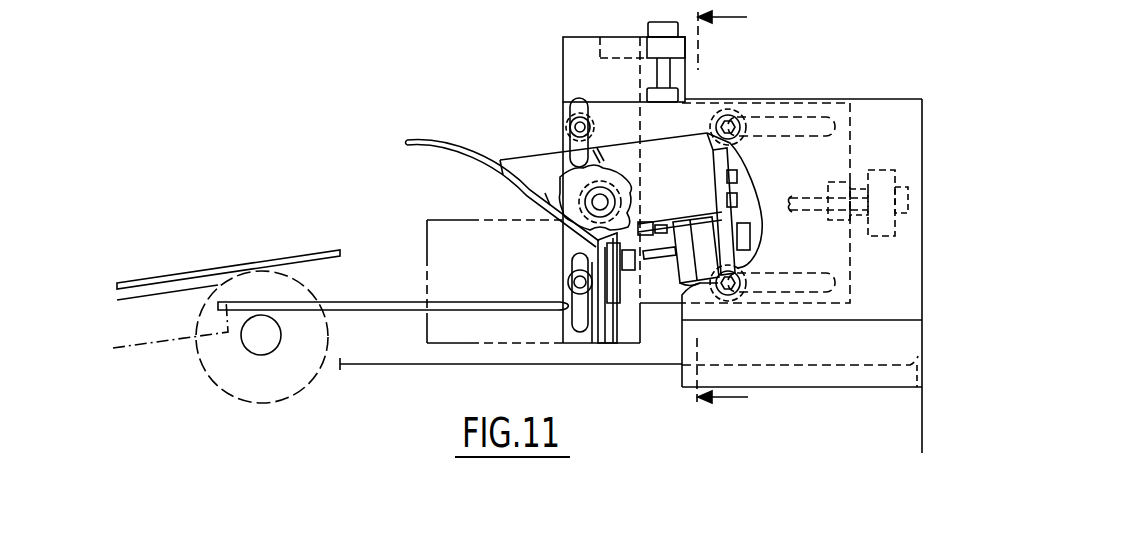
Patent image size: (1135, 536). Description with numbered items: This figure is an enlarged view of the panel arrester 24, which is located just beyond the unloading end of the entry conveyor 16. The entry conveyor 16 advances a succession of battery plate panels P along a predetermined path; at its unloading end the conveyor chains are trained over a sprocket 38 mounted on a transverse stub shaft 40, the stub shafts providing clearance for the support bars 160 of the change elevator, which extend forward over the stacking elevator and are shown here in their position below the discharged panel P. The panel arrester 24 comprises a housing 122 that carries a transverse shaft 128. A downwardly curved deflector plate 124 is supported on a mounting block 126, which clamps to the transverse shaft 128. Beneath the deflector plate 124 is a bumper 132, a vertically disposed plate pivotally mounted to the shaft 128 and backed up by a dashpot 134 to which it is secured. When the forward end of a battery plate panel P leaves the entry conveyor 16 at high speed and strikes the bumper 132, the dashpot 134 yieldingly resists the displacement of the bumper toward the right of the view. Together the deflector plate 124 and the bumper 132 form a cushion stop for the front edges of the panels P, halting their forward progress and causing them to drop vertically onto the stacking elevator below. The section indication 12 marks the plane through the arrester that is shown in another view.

The battery plate panel P is at (191, 271).
The section line 12- 12 is at (563, 210).
The entry conveyor 16 is at (176, 365).
The panel arrester 24 is at (835, 77).
The sprocket 38 is at (275, 404).
The transverse stub shaft 40 is at (262, 353).
The housing 122 is at (906, 110).
The deflector plate 124 is at (455, 141).
The mounting block 126 is at (513, 158).
The transverse shaft 128 is at (604, 200).
The bumper 132 is at (612, 345).
The dashpot 134 is at (713, 248).
The support bar 160 is at (363, 302).